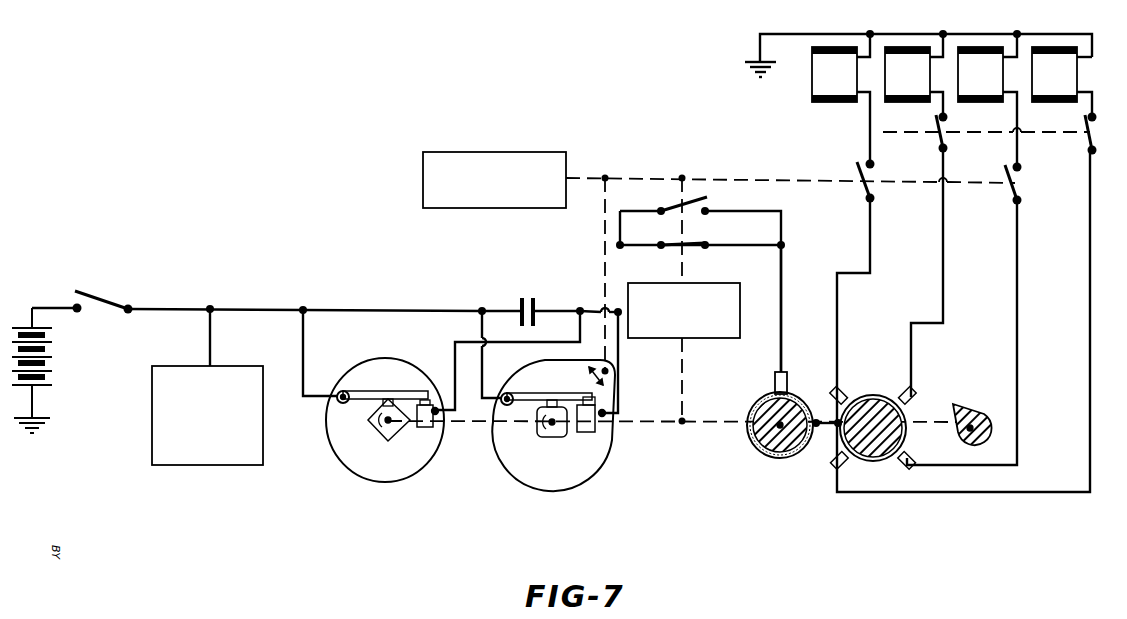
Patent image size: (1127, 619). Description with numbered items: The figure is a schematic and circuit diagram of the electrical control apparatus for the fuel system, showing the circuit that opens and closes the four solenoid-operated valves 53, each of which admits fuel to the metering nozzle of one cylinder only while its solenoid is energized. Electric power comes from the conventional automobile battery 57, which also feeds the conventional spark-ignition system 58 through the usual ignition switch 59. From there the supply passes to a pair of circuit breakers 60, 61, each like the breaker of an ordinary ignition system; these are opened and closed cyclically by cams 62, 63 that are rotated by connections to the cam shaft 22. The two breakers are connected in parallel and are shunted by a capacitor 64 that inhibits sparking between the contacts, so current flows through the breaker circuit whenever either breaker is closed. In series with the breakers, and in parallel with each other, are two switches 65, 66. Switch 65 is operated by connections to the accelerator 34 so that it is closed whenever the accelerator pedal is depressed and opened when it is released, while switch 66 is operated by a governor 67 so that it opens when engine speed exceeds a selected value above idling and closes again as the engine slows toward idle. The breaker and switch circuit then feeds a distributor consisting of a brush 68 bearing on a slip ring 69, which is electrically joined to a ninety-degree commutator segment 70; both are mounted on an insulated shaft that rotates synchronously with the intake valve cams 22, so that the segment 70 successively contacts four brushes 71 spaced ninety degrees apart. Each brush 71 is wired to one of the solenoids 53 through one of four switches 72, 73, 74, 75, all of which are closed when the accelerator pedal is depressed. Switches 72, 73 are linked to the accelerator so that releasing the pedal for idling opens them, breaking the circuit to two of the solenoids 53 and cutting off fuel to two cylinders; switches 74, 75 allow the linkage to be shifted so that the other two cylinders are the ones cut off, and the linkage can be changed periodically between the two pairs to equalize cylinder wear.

The cam shaft 22 is at (974, 414).
The accelerator 34 is at (510, 152).
The solenoid-operated valve 53 is at (944, 74).
The battery 57 is at (55, 358).
The spark-ignition system 58 is at (262, 370).
The ignition switch 59 is at (88, 294).
The circuit breaker 60 is at (385, 413).
The circuit breaker 61 is at (547, 425).
The cam 62 is at (386, 438).
The cam 63 is at (556, 438).
The capacitor 64 is at (546, 276).
The switch 65 is at (664, 206).
The switch 66 is at (666, 241).
The governor 67 is at (740, 272).
The brush 68 is at (788, 383).
The slip ring 69 is at (806, 408).
The commutator segment 70 is at (866, 390).
The brush 71 is at (846, 392).
The switch 72 is at (862, 165).
The switch 73 is at (1008, 168).
The switch 74 is at (935, 121).
The switch 75 is at (1086, 121).